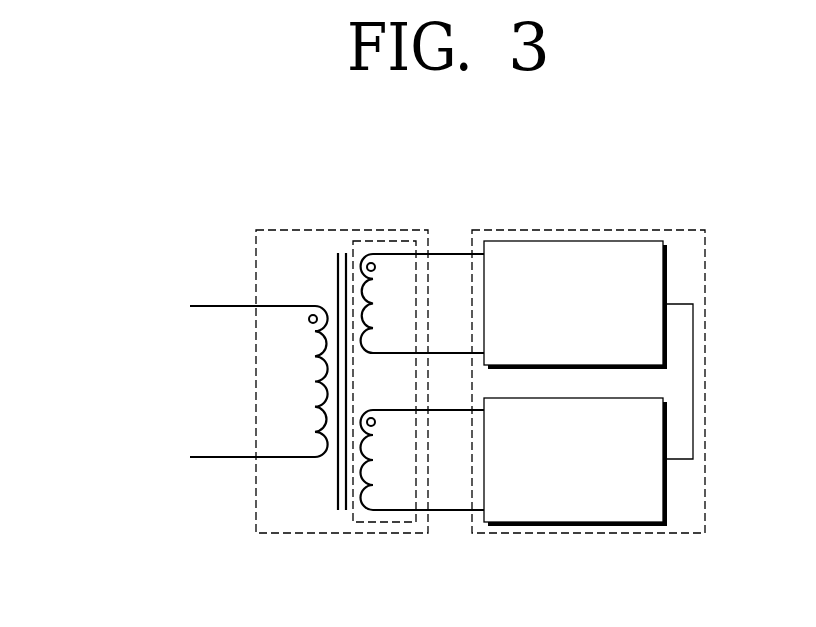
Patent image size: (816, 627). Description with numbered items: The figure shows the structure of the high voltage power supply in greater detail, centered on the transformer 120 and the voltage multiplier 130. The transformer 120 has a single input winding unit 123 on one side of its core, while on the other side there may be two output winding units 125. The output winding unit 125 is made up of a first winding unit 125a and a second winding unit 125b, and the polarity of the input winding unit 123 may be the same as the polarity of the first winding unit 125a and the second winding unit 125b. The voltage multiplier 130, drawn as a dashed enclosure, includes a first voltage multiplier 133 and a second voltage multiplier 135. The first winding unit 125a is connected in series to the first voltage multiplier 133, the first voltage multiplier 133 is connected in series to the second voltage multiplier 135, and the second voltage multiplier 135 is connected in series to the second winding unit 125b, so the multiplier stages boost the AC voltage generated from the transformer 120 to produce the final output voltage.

The transformer 120 is at (293, 228).
The input winding unit 123 is at (313, 458).
The output winding unit 125 is at (398, 240).
The first winding unit 125a is at (372, 254).
The second winding unit 125b is at (372, 511).
The voltage multiplier 130 is at (607, 228).
The first voltage multiplier 133 is at (667, 270).
The second voltage multiplier 135 is at (667, 493).